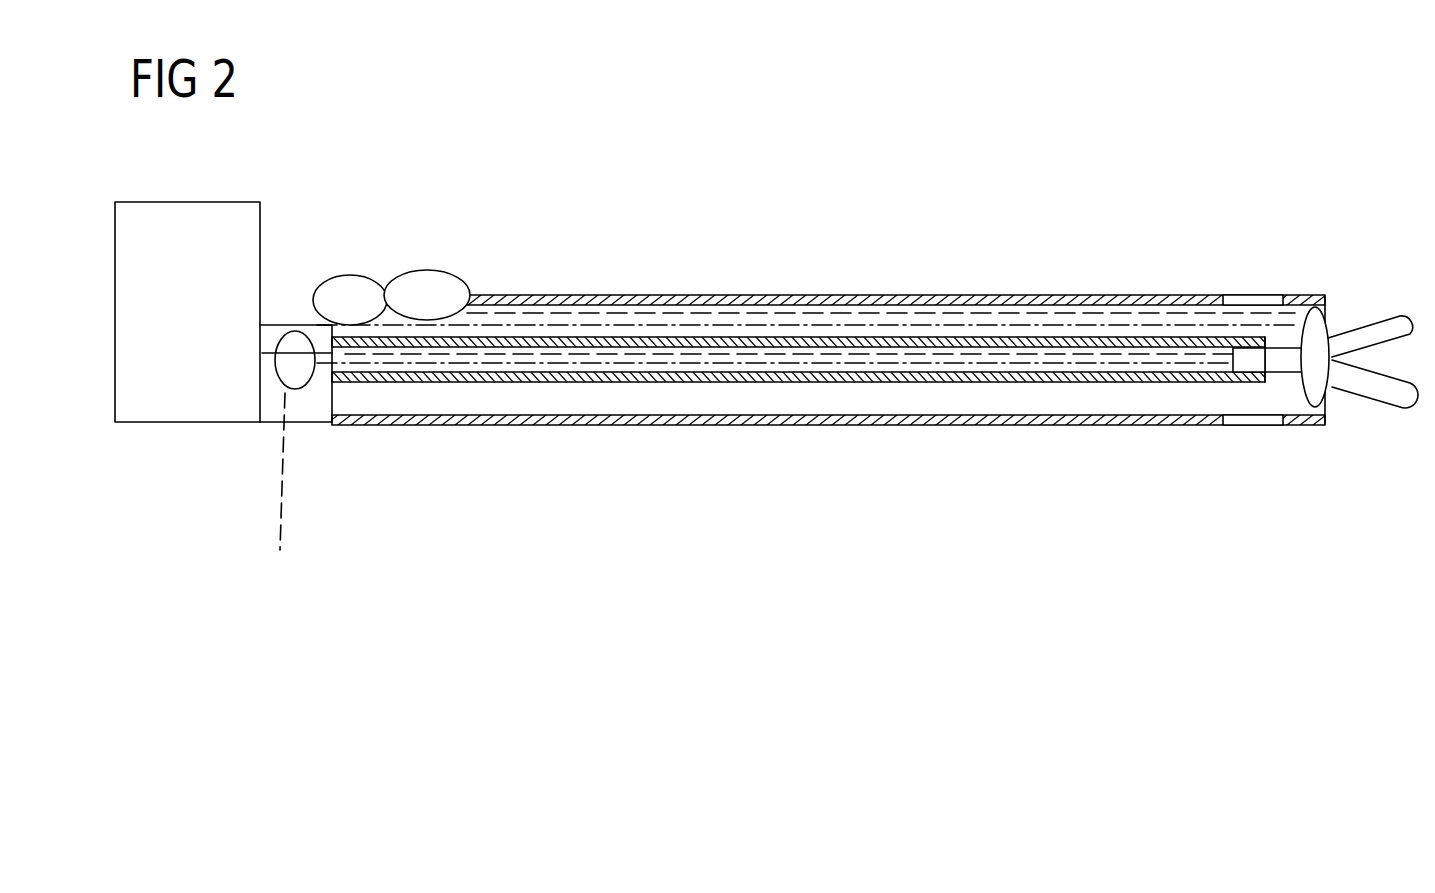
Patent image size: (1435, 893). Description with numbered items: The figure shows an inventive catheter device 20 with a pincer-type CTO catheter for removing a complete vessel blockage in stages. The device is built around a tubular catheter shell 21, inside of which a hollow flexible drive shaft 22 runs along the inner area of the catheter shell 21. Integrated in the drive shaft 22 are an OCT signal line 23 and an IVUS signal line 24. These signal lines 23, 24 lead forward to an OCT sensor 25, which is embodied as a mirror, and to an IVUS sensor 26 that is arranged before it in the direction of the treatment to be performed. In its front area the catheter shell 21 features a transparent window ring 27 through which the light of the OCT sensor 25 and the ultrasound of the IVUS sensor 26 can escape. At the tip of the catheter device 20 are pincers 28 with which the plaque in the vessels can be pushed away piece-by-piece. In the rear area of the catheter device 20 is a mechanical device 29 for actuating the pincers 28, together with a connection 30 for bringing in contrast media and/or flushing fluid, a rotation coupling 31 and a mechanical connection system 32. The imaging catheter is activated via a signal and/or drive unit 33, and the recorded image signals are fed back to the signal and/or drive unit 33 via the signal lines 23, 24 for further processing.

The catheter device 20 is at (747, 250).
The tubular catheter shell 21 is at (922, 300).
The hollow flexible drive shaft 22 is at (676, 375).
The OCT signal line 23 is at (797, 356).
The IVUS signal line 24 is at (873, 365).
The OCT sensor 25 is at (1251, 366).
The IVUS sensor 26 is at (1280, 364).
The transparent window ring 27 is at (1252, 300).
The pincers 28 is at (1398, 327).
The mechanical device 29 is at (387, 270).
The connection 30 is at (283, 508).
The rotation coupling 31 is at (297, 378).
The mechanical connection system 32 is at (272, 328).
The signal and/or drive unit 33 is at (196, 412).